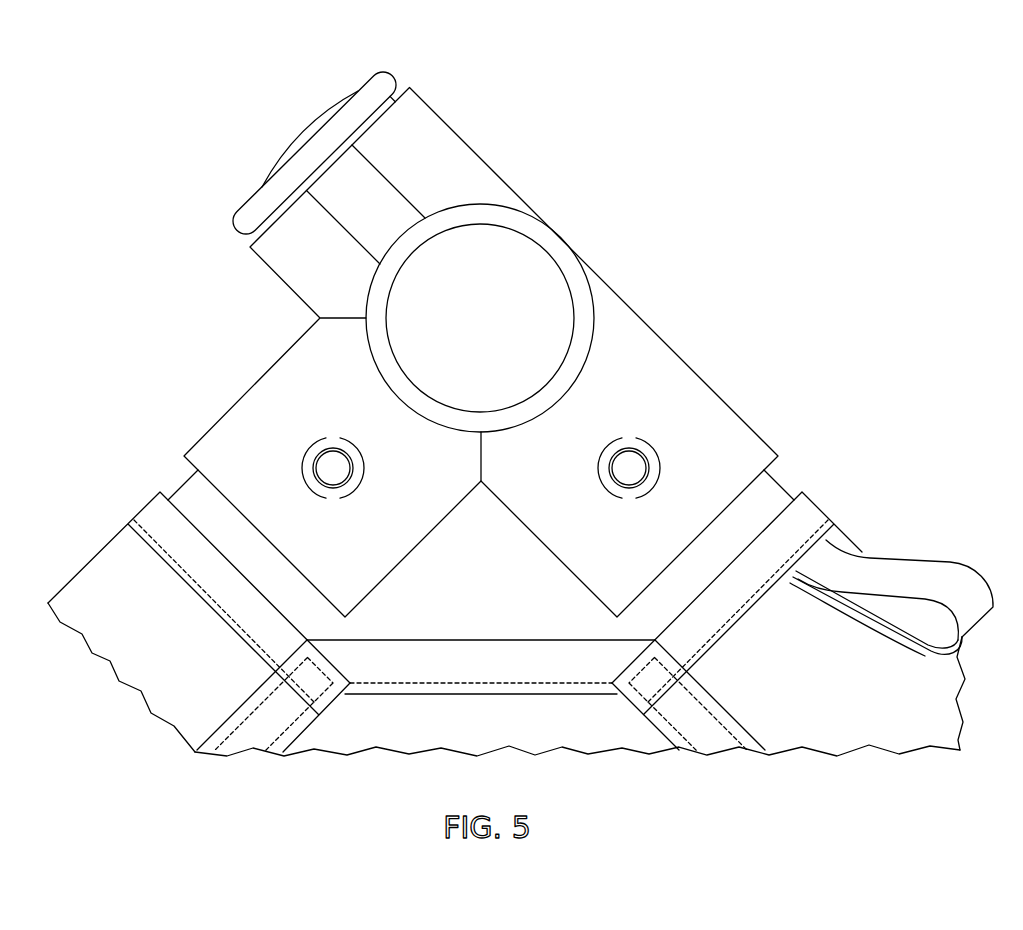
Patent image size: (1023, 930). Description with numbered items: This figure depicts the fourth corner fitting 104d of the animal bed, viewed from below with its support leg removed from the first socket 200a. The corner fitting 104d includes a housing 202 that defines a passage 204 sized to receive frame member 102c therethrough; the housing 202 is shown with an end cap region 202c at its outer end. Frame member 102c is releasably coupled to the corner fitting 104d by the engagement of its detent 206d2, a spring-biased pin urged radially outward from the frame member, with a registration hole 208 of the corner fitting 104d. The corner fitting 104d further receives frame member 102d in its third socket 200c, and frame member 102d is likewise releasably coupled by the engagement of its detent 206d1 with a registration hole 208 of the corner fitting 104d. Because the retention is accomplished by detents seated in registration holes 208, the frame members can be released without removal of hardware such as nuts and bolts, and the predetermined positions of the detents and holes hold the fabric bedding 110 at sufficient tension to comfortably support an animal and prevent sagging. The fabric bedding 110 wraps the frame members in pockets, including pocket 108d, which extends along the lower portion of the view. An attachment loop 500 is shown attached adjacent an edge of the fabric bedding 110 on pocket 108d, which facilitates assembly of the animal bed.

The corner fitting 104d is at (513, 387).
The first socket 200a is at (470, 204).
The third socket 200c is at (212, 433).
The housing 202 is at (498, 185).
The end face of cap 202c is at (298, 137).
The passage 204 is at (409, 82).
The detent 206d1 is at (332, 460).
The detent 206d2 is at (624, 460).
The registration hole 208 is at (339, 501).
The frame member 102d is at (188, 488).
The frame member 102c is at (773, 498).
The pocket 108d is at (113, 575).
The fabric bedding 110 is at (463, 735).
The attachment loop 500 is at (940, 562).